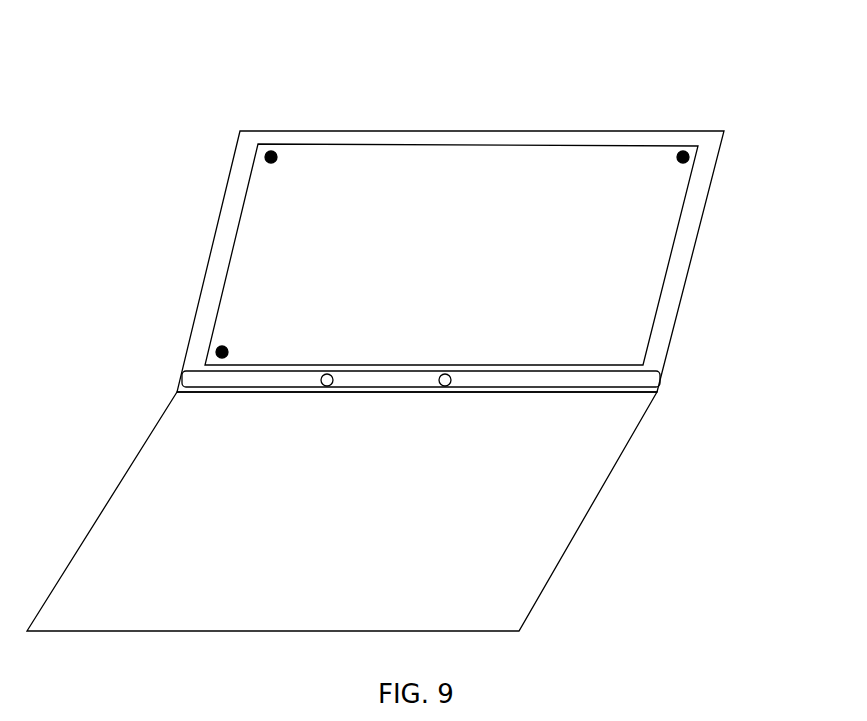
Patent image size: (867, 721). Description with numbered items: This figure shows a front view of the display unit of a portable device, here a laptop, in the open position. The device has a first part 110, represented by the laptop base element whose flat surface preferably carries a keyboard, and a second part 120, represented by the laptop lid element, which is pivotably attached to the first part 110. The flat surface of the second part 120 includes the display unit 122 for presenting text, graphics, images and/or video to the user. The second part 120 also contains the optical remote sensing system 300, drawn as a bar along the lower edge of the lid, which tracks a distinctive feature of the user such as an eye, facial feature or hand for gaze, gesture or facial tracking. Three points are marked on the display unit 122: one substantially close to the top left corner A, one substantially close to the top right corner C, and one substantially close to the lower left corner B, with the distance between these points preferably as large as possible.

The first part 110 is at (533, 610).
The second part 120 is at (447, 129).
The display unit 122 is at (678, 232).
The optical remote sensing system 300 is at (665, 378).
The top left corner A is at (267, 153).
The lower left corner B is at (212, 352).
The top right corner C is at (695, 158).